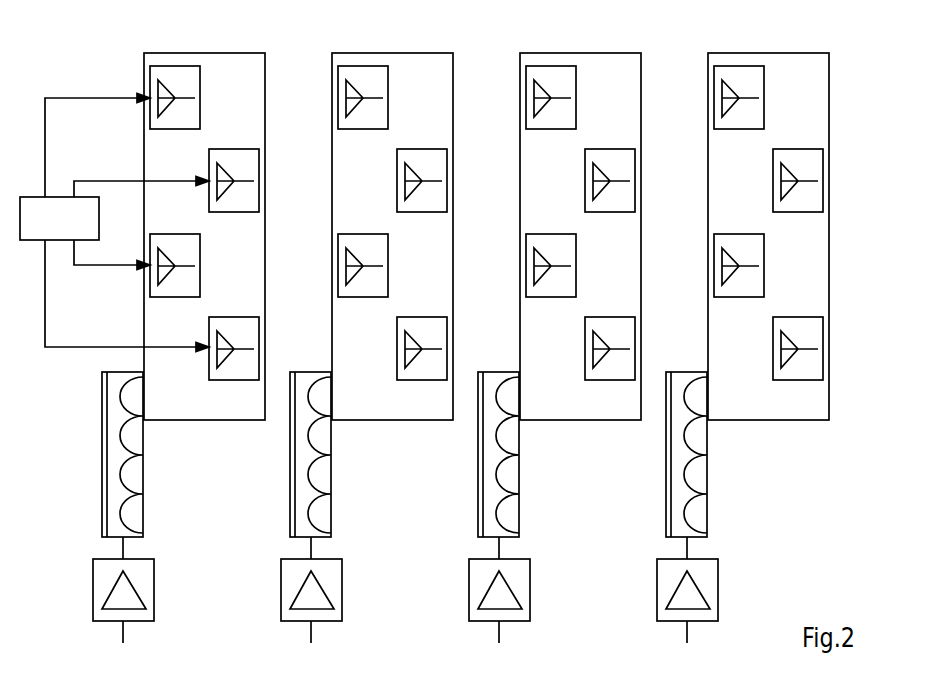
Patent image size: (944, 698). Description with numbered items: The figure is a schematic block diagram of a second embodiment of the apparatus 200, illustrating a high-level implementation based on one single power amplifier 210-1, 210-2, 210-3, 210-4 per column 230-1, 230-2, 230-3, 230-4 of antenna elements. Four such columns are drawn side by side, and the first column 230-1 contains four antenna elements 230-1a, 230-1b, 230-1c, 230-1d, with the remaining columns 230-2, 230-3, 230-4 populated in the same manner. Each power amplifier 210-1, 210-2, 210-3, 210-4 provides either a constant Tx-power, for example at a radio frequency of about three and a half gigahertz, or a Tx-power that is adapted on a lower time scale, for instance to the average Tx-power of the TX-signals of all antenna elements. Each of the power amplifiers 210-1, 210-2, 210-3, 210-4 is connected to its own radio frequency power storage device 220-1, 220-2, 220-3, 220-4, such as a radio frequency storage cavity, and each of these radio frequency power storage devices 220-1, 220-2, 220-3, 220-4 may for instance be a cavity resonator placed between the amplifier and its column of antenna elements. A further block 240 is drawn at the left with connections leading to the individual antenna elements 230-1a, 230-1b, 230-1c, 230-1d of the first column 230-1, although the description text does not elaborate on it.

The apparatus 200 is at (849, 538).
The power amplifier 210-1 is at (93, 590).
The power amplifier 210-2 is at (281, 590).
The power amplifier 210-3 is at (469, 590).
The power amplifier 210-4 is at (657, 590).
The radio frequency power storage device 220-1 is at (102, 455).
The radio frequency power storage device 220-2 is at (290, 455).
The radio frequency power storage device 220-3 is at (478, 455).
The radio frequency power storage device 220-4 is at (666, 455).
The column of antenna elements 230-1 is at (163, 217).
The column of antenna elements 230-2 is at (392, 53).
The column of antenna elements 230-3 is at (580, 53).
The column of antenna elements 230-4 is at (768, 53).
The antenna element 230-1a is at (150, 78).
The antenna element 230-1b is at (209, 162).
The antenna element 230-1c is at (150, 278).
The antenna element 230-1d is at (209, 332).
The controller 240 is at (77, 228).